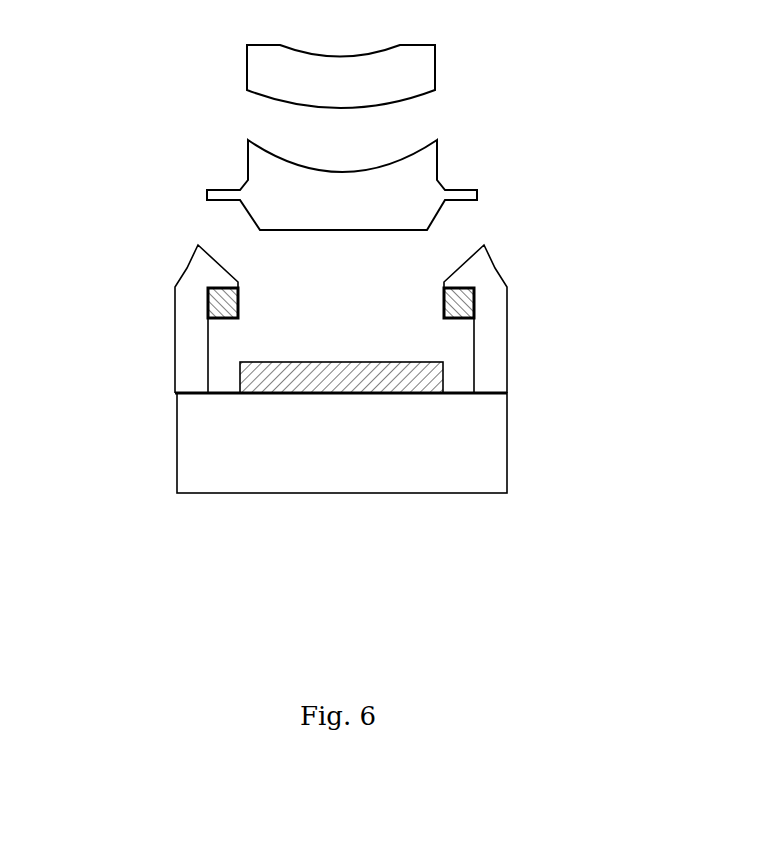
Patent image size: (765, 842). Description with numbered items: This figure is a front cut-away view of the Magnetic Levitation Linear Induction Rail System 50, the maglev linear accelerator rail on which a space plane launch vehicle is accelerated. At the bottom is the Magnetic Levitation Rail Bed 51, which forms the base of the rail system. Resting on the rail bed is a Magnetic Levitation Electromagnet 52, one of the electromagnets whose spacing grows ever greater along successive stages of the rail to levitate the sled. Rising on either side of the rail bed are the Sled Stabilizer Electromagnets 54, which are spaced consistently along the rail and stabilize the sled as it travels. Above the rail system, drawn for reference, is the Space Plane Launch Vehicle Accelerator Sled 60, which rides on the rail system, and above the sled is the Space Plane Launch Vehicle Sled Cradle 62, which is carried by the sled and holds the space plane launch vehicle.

The Magnetic Levitation Linear Induction Rail System 50 is at (552, 419).
The Magnetic Levitation Rail Bed 51 is at (207, 453).
The Magnetic Levitation Electromagnets 52 is at (270, 360).
The Sled Stabilizer Electromagnets 54 is at (238, 305).
The Space Plane Launch Vehicle Accelerator Sled 60 is at (307, 195).
The Space Plane Launch Vehicle Sled Cradle 62 is at (380, 72).